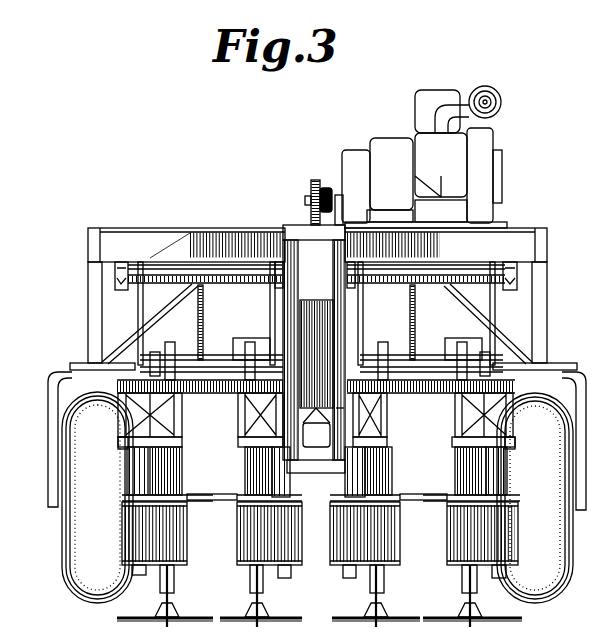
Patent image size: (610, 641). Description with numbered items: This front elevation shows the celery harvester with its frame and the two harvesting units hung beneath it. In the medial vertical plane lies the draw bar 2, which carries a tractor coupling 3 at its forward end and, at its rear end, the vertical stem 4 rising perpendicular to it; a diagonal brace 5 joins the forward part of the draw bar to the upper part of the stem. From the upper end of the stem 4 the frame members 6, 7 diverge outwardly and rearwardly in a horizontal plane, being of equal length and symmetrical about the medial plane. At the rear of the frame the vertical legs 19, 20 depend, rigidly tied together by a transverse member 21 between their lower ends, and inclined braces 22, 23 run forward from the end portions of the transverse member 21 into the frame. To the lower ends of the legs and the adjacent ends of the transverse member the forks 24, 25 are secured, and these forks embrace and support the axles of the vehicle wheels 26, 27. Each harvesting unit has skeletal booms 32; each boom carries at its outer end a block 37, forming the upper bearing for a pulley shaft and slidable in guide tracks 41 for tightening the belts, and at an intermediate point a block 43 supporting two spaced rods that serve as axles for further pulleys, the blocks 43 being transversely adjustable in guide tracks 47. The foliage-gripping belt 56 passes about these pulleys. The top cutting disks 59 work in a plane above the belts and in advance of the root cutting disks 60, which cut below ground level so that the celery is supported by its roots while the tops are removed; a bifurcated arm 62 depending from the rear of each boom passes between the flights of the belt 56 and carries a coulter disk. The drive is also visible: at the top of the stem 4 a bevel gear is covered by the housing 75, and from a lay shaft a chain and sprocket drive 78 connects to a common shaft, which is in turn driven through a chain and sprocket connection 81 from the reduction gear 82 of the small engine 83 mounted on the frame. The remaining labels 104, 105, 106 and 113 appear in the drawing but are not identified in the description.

The draw bar 2 is at (316, 435).
The tractor coupling 3 is at (339, 402).
The vertical stem 4 is at (288, 311).
The diagonal brace 5 is at (307, 321).
The frame member 6 is at (190, 232).
The frame member 7 is at (512, 238).
The vertical leg 19 is at (93, 301).
The vertical leg 20 is at (548, 305).
The transverse member 21 is at (127, 356).
The inclined brace 22 is at (150, 316).
The inclined brace 23 is at (503, 328).
The fork 24 is at (56, 372).
The fork 25 is at (580, 380).
The vehicle wheel 26 is at (78, 540).
The vehicle wheel 27 is at (574, 546).
The boom 32 is at (160, 420).
The block 37 is at (135, 478).
The guide track 41 is at (125, 445).
The block 43 is at (248, 470).
The guide track 47 is at (238, 443).
The belt 56 is at (187, 537).
The top cutting disk 59 is at (407, 497).
The root cutting disk 60 is at (226, 614).
The bifurcated arm 62 is at (169, 622).
The housing 75 is at (243, 358).
The chain and sprocket drive 78 is at (198, 318).
The chain and sprocket connection 81 is at (310, 212).
The reduction gear 82 is at (383, 170).
The small engine 83 is at (434, 160).
The bearing post 104 is at (143, 297).
The right shaft 105 is at (434, 367).
The left shaft 106 is at (220, 367).
The drive sprocket 113 is at (324, 188).